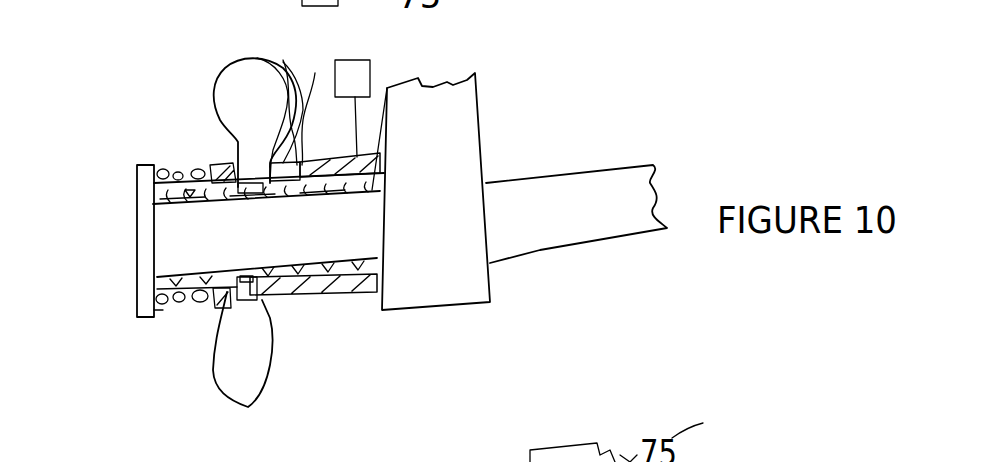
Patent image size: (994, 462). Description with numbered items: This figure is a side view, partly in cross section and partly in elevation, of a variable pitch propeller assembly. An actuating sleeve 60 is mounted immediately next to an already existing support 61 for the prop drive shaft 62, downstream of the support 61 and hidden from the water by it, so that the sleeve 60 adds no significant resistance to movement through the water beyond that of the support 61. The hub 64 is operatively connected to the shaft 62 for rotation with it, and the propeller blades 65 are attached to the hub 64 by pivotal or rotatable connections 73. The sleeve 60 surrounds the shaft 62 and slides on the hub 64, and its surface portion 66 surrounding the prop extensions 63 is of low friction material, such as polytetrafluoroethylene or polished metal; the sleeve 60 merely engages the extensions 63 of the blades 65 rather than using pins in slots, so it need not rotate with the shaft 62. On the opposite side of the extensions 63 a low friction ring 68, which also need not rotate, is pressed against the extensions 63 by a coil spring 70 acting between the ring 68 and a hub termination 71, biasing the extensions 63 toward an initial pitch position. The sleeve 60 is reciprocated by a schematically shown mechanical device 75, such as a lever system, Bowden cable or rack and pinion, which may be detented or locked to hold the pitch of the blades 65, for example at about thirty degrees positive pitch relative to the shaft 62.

The actuating sleeve 60 is at (390, 83).
The support 61 is at (467, 115).
The prop drive shaft 62 is at (643, 152).
The extensions 63 is at (283, 62).
The hub 64 is at (190, 190).
The propeller blades 65 is at (233, 80).
The surface portion 66 is at (342, 348).
The ring 68 is at (230, 180).
The coil spring 70 is at (158, 310).
The hub termination 71 is at (138, 242).
The pivotal/rotatable connections 73 is at (315, 211).
The mechanical device 75 is at (370, 63).